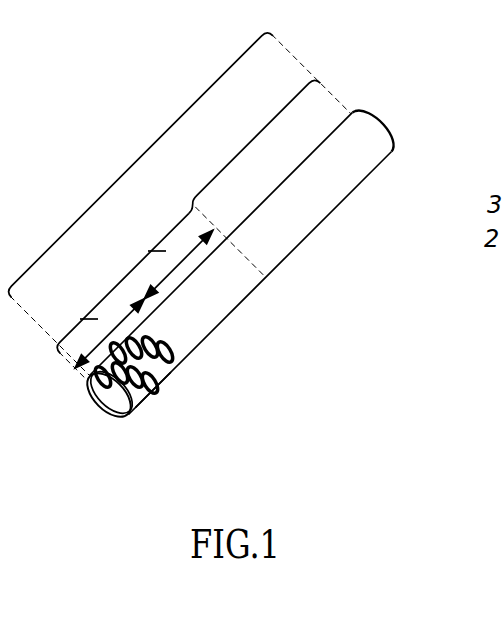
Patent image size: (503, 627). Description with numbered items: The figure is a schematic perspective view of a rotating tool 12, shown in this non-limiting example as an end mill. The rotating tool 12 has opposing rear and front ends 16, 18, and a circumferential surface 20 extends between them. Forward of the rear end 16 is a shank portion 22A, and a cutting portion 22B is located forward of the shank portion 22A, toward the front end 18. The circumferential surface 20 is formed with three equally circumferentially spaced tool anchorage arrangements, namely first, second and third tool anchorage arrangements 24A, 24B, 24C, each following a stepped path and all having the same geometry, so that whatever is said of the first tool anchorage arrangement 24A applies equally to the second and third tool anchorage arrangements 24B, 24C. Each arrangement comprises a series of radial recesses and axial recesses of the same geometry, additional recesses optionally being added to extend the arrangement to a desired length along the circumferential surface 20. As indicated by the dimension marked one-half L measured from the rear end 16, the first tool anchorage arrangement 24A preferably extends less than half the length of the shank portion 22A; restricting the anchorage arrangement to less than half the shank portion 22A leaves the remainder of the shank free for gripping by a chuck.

The rotating tool 12 is at (167, 68).
The rear end 16 is at (104, 400).
The front end 18 is at (392, 116).
The circumferential surface 20 is at (142, 157).
The shank portion 22A is at (128, 273).
The cutting portion 22B is at (255, 140).
The first tool anchorage arrangement 24A is at (141, 418).
The second tool anchorage arrangement 24B is at (163, 399).
The third tool anchorage arrangement 24C is at (185, 356).